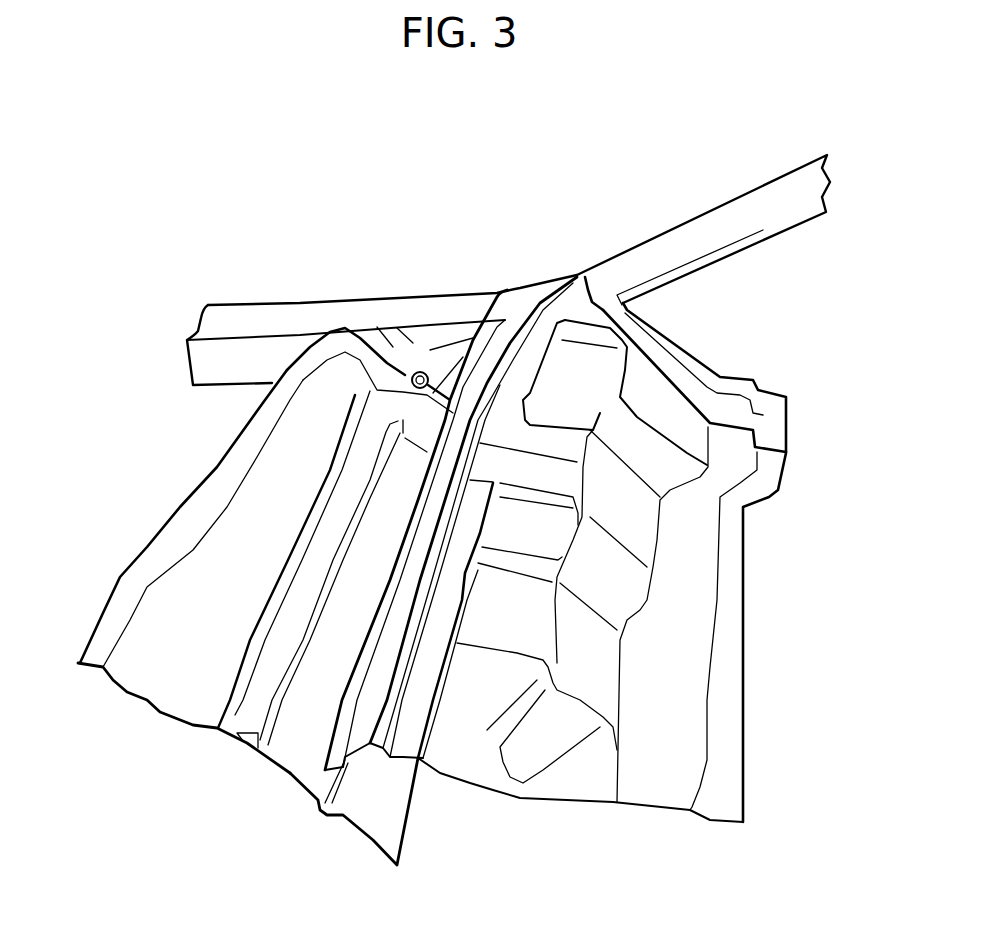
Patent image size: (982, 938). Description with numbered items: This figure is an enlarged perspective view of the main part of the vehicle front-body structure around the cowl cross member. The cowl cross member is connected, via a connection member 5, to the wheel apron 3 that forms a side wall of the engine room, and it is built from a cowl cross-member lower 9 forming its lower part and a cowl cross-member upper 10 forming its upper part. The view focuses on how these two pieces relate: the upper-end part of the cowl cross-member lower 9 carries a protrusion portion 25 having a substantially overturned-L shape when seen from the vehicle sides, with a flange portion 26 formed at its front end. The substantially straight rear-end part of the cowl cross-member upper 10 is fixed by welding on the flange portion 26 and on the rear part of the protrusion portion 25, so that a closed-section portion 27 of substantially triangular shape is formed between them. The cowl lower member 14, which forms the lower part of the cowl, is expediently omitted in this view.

The wheel apron 3 is at (257, 327).
The connection member 5 is at (393, 350).
The cowl cross-member lower 9 is at (380, 810).
The cowl cross-member upper 10 is at (227, 558).
The cowl lower member 14 is at (688, 600).
The protrusion portion 25 is at (273, 715).
The flange portion 26 is at (237, 702).
The closed-section portion 27 is at (247, 747).